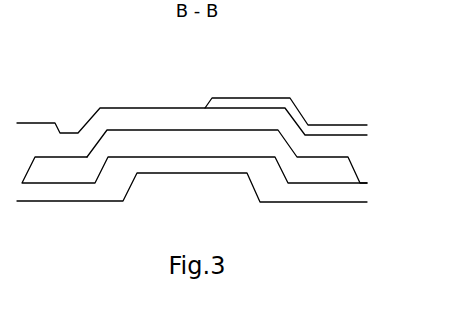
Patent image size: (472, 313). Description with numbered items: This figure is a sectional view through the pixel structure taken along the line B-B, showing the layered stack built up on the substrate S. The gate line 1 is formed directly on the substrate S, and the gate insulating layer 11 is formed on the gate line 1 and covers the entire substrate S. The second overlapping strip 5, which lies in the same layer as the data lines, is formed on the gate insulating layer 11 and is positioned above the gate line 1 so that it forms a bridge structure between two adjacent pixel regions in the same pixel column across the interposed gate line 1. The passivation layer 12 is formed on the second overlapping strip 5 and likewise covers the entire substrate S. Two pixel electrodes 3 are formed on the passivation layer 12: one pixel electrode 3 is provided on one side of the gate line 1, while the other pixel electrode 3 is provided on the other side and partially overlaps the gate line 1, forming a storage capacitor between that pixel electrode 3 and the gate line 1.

The passivation layer 12 is at (192, 93).
The gate line 1 is at (194, 119).
The second overlapping strip 5 is at (227, 117).
The gate insulating layer 11 is at (192, 126).
The pixel electrode 3 is at (286, 90).
The substrate S is at (307, 236).